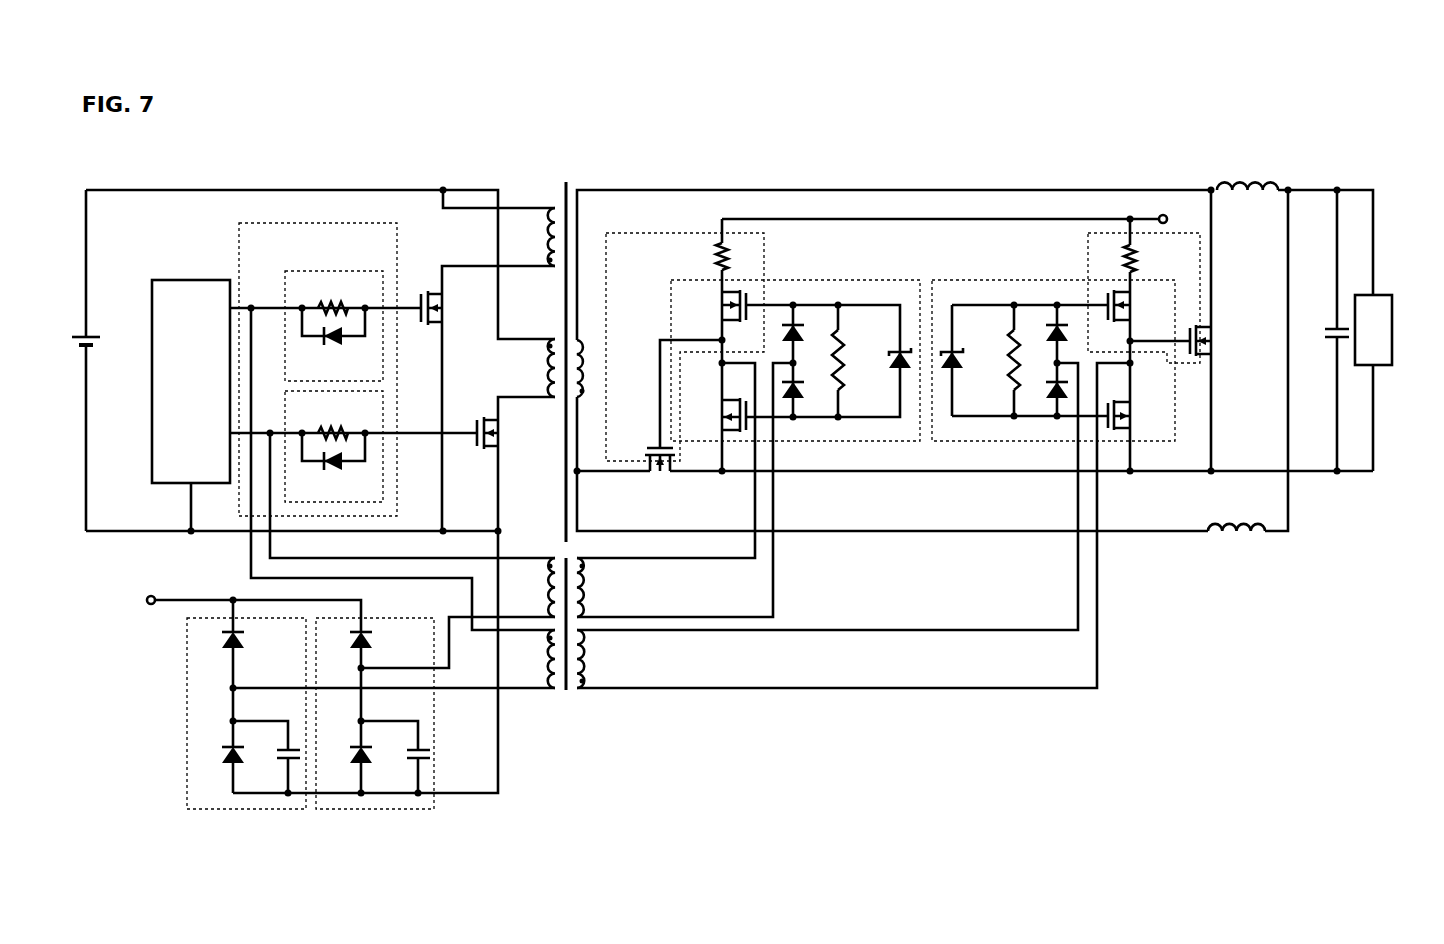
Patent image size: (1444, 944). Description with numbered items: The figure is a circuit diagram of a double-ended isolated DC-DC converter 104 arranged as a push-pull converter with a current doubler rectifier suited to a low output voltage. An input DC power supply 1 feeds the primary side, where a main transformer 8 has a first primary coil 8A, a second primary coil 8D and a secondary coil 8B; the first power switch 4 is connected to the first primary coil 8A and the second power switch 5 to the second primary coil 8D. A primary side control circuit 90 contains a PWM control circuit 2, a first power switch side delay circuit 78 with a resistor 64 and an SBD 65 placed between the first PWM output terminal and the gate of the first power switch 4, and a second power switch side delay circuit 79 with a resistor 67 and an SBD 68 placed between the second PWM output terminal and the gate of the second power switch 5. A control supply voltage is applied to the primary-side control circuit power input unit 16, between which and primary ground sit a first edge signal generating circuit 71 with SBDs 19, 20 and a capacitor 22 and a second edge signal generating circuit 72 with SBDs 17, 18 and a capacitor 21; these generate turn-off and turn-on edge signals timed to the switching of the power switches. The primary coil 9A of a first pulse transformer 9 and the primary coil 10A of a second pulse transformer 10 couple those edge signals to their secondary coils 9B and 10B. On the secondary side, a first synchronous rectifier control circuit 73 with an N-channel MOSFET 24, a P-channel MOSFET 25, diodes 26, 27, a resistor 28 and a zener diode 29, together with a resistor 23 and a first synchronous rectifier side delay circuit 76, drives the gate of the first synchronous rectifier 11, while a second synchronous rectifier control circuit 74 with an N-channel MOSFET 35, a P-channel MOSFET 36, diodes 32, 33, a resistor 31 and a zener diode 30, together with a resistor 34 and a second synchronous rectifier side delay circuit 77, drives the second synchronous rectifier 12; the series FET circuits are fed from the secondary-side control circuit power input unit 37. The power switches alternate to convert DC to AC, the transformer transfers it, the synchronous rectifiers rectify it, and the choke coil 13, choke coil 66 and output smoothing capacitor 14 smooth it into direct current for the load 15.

The input DC power supply 1 is at (72, 341).
The PWM control circuit 2 is at (185, 280).
The first power switch 4 is at (483, 420).
The second power switch 5 is at (427, 295).
The main transformer 8 is at (562, 342).
The first primary coil 8A is at (530, 368).
The secondary coil 8B is at (598, 368).
The second primary coil 8D is at (530, 237).
The first pulse transformer 9 is at (564, 594).
The primary coil of first pulse transformer 9A is at (531, 587).
The secondary coil of first pulse transformer 9B is at (600, 587).
The second pulse transformer 10 is at (565, 692).
The primary coil of second pulse transformer 10A is at (528, 659).
The secondary coil of second pulse transformer 10B is at (566, 695).
The first synchronous rectifier 11 is at (645, 455).
The second synchronous rectifier 12 is at (1216, 340).
The choke coil 13 is at (1247, 169).
The output smoothing capacitor 14 is at (1320, 334).
The load 15 is at (1392, 295).
The primary-side control circuit power input unit 16 is at (150, 585).
The schottky barrier diode 17 is at (216, 641).
The schottky barrier diode 18 is at (216, 756).
The schottky barrier diode 19 is at (345, 641).
The schottky barrier diode 20 is at (345, 756).
The capacitor 21 is at (266, 757).
The capacitor 22 is at (395, 757).
The resistor 23 is at (738, 258).
The N-channel MOSFET 24 is at (717, 306).
The P-channel MOSFET 25 is at (717, 415).
The diode 26 is at (806, 333).
The diode 27 is at (806, 390).
The resistor 28 is at (853, 360).
The zener diode 29 is at (895, 372).
The zener diode 30 is at (960, 372).
The resistor 31 is at (999, 360).
The diode 32 is at (1045, 333).
The diode 33 is at (1045, 390).
The resistor 34 is at (1147, 258).
The N-channel MOSFET 35 is at (1136, 306).
The P-channel MOSFET 36 is at (1136, 415).
The secondary-side control circuit power input unit 37 is at (1181, 219).
The resistor 64 is at (333, 421).
The SBD 65 is at (333, 467).
The choke coil 66 is at (1236, 512).
The resistor 67 is at (333, 296).
The SBD 68 is at (333, 343).
The first edge signal generating circuit 71 is at (434, 809).
The second edge signal generating circuit 72 is at (187, 809).
The first synchronous rectifier control circuit 73 is at (835, 280).
The second synchronous rectifier control circuit 74 is at (1015, 280).
The first synchronous rectifier side delay circuit 76 is at (680, 233).
The second synchronous rectifier side delay circuit 77 is at (1088, 233).
The first power switch side delay circuit 78 is at (383, 470).
The second power switch side delay circuit 79 is at (310, 270).
The primary side control circuit 90 is at (277, 223).
The double-ended isolated DC-DC converter 104 is at (1236, 94).